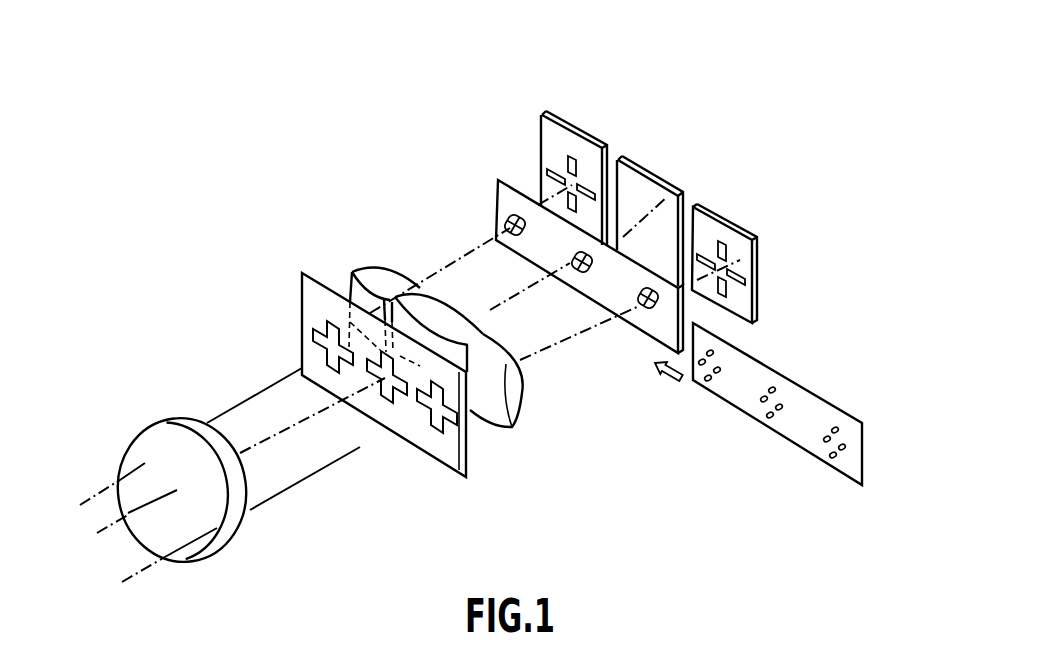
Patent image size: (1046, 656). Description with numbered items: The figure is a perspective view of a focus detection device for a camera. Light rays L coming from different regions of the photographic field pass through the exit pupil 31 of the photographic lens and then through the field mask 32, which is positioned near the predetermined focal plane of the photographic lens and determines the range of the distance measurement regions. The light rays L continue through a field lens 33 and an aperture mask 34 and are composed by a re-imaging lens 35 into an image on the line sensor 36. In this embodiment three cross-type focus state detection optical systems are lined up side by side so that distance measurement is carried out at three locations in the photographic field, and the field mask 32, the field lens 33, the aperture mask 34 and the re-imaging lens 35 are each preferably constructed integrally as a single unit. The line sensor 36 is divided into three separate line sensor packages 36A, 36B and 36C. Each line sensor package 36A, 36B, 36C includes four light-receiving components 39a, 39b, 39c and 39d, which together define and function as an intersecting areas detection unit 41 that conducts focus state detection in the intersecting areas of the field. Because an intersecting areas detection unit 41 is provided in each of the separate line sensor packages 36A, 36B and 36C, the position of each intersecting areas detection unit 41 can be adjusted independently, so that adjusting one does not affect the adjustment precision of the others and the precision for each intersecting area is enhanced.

The exit pupil 31 is at (147, 437).
The field mask 32 is at (468, 458).
The field lens 33 is at (520, 412).
The aperture mask 34 is at (793, 420).
The re-imaging lens 35 is at (535, 205).
The line sensor 36 is at (621, 165).
The line sensor package 36A is at (656, 146).
The line sensor package 36B is at (742, 226).
The line sensor package 36C is at (577, 112).
The light-receiving component 39a is at (578, 158).
The light-receiving component 39b is at (566, 203).
The light-receiving component 39c is at (550, 172).
The light-receiving component 39d is at (590, 190).
The intersecting areas detection unit 41 is at (556, 148).
The light rays L is at (282, 495).